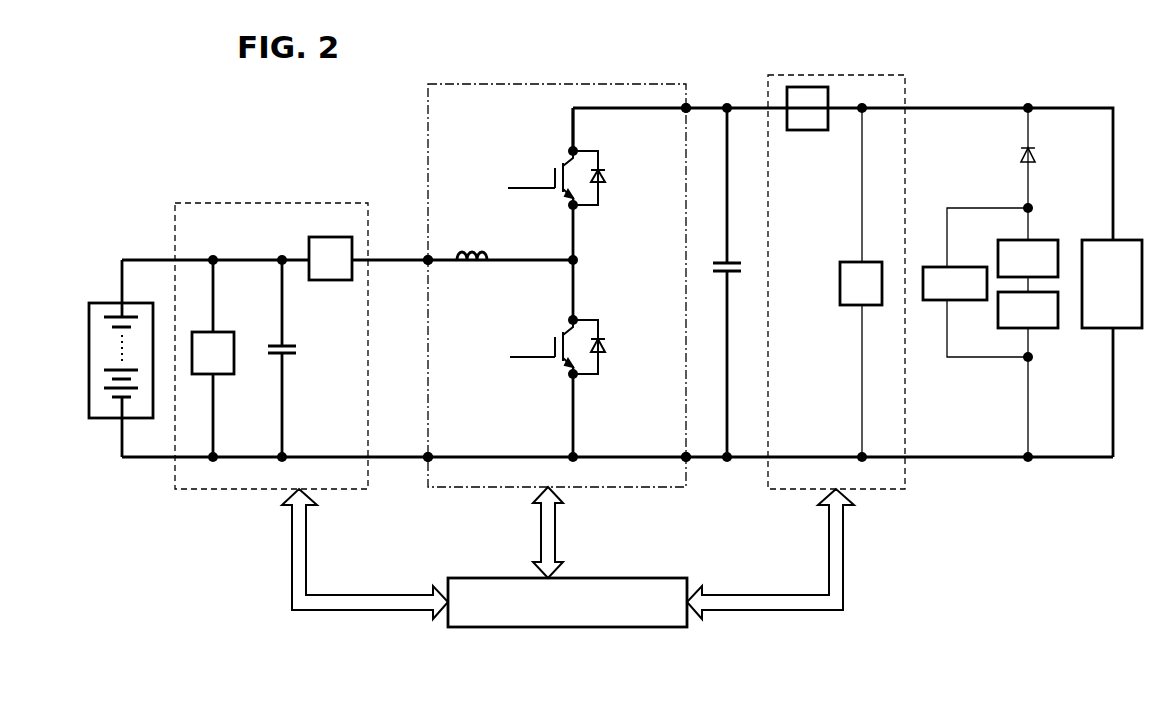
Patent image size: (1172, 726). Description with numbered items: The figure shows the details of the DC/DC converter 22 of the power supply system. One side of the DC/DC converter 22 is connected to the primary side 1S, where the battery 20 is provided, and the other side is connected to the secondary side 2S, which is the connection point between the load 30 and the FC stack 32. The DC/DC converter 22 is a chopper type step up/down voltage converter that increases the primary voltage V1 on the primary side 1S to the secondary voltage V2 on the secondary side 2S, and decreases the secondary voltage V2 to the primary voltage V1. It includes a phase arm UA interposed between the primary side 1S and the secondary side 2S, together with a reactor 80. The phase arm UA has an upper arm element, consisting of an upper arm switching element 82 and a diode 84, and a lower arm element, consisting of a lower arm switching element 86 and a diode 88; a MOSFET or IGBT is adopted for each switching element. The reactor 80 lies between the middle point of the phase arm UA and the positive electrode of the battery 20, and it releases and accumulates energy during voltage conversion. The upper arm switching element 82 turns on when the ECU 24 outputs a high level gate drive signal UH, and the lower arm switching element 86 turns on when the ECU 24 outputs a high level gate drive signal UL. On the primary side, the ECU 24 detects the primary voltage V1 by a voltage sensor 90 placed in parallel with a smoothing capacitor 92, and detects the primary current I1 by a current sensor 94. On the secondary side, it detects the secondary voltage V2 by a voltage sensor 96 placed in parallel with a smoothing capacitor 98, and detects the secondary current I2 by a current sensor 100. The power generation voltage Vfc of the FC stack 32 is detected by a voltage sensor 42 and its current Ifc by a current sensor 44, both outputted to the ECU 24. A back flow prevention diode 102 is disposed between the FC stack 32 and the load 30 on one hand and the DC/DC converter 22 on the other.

The battery 20 is at (103, 303).
The DC/DC converter 22 is at (484, 84).
The electronic control unit 24 is at (610, 578).
The load 30 is at (1126, 240).
The FC stack 32 is at (1046, 329).
The voltage sensor 42 is at (962, 267).
The current sensor 44 is at (1046, 240).
The reactor 80 is at (473, 250).
The upper arm switching element 82 is at (562, 164).
The diode 84 is at (603, 178).
The lower arm switching element 86 is at (561, 333).
The diode 88 is at (603, 348).
The voltage sensor 90 is at (218, 332).
The smoothing capacitor 92 is at (268, 353).
The current sensor 94 is at (348, 283).
The voltage sensor 96 is at (872, 262).
The smoothing capacitor 98 is at (738, 269).
The current sensor 100 is at (808, 130).
The back flow prevention diode 102 is at (1037, 157).
The primary side 1S is at (425, 255).
The secondary side 2S is at (690, 104).
The phase arm UA is at (576, 100).